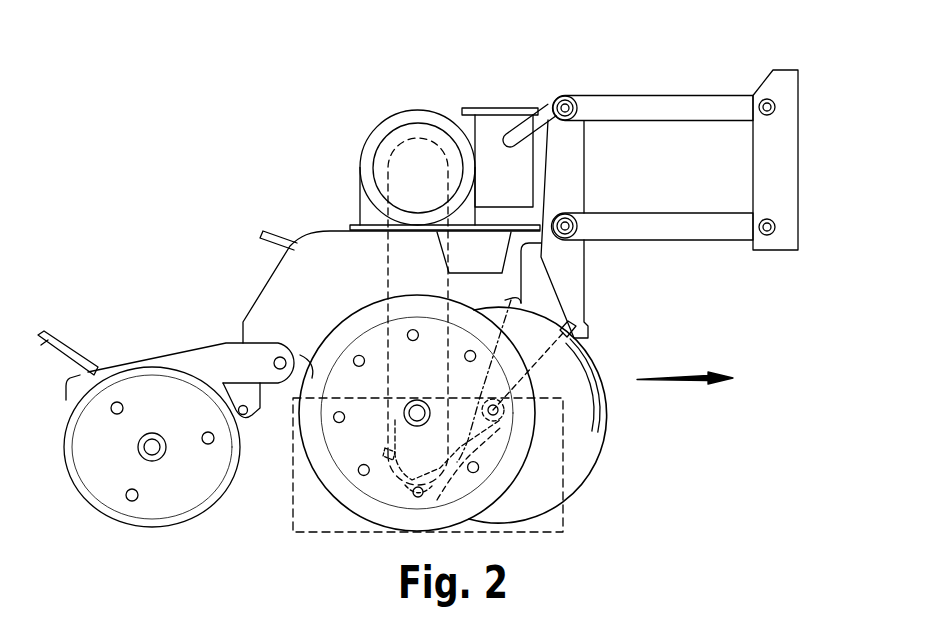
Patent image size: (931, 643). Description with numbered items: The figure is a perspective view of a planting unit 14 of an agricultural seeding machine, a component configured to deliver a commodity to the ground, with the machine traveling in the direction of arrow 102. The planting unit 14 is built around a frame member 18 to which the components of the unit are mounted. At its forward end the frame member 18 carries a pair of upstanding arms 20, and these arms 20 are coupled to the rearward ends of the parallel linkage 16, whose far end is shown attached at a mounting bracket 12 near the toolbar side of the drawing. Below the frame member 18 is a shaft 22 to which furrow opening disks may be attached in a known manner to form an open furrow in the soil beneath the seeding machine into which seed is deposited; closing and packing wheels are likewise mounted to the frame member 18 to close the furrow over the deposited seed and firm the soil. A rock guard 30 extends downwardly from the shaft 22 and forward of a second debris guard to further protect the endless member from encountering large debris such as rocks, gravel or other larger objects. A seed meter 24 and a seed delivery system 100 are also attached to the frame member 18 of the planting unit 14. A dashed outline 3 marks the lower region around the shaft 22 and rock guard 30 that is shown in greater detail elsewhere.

The planting unit 14 is at (155, 166).
The frame member 18 is at (313, 309).
The seed meter 24 is at (369, 92).
The seed delivery system 100 is at (511, 66).
The parallel linkage 16 is at (648, 112).
The toolbar mounting bracket 12 is at (793, 181).
The upstanding arms 20 is at (573, 186).
The arrow 102 is at (685, 365).
The shaft 22 is at (503, 410).
The rock guard 30 is at (470, 470).
The detail region of FIG. 3 is at (563, 520).